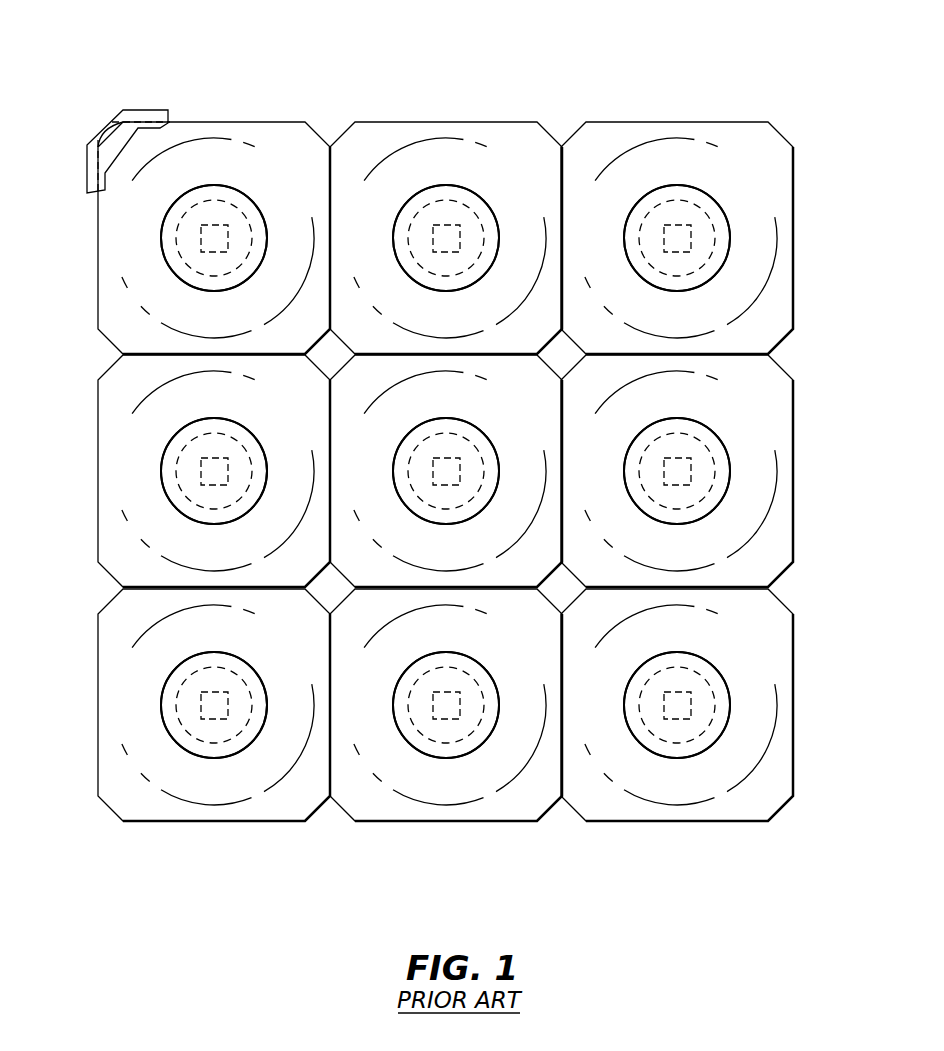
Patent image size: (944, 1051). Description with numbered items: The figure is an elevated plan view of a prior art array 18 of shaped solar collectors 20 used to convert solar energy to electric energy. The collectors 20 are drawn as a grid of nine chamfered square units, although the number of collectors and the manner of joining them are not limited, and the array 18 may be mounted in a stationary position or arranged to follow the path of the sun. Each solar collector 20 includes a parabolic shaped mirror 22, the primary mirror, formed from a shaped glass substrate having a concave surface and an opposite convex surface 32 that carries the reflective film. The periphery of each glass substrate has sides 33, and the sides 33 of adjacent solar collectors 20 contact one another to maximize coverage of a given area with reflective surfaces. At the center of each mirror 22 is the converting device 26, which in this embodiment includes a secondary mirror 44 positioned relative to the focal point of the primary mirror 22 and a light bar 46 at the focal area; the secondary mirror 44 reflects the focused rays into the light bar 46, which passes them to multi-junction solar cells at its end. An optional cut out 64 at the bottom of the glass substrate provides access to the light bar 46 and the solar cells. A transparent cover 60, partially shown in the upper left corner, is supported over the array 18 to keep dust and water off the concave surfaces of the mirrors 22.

The array 18 is at (210, 908).
The solar collector 20 is at (385, 80).
The parabolic shaped mirror 22 is at (208, 113).
The converting device 26 is at (195, 294).
The convex surface 32 is at (430, 120).
The sides 33 is at (100, 452).
The secondary mirror 44 is at (232, 188).
The light bar 46 is at (200, 243).
The cover 60 is at (117, 145).
The cut out 64 is at (192, 207).